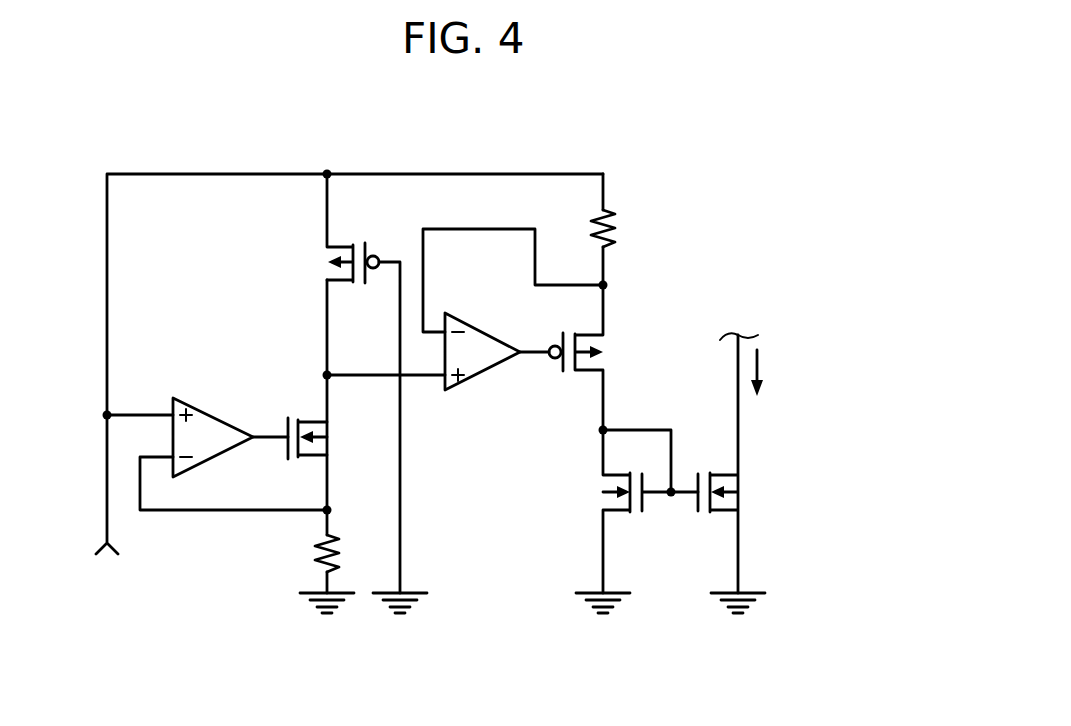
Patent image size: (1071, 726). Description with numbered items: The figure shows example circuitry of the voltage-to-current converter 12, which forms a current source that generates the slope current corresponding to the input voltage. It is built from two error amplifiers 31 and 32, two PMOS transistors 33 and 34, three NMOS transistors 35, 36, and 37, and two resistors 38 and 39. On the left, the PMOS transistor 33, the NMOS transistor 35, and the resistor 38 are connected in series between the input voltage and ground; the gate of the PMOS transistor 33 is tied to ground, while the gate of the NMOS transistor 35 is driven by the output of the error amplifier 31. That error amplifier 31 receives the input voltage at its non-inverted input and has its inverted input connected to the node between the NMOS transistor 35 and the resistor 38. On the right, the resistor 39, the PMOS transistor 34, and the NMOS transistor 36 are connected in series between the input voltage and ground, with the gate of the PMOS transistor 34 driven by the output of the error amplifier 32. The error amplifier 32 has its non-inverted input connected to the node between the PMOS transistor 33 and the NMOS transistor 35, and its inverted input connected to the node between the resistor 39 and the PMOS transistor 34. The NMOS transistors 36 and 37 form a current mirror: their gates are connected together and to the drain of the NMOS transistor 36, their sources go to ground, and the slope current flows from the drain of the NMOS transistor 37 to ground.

The voltage-to-current converter 12 is at (695, 148).
The error amplifier 31 is at (211, 414).
The error amplifier 32 is at (483, 331).
The PMOS transistor 33 is at (356, 241).
The PMOS transistor 34 is at (578, 378).
The NMOS transistor 35 is at (303, 416).
The NMOS transistor 36 is at (625, 517).
The NMOS transistor 37 is at (722, 469).
The resistor 38 is at (318, 558).
The resistor 39 is at (617, 222).